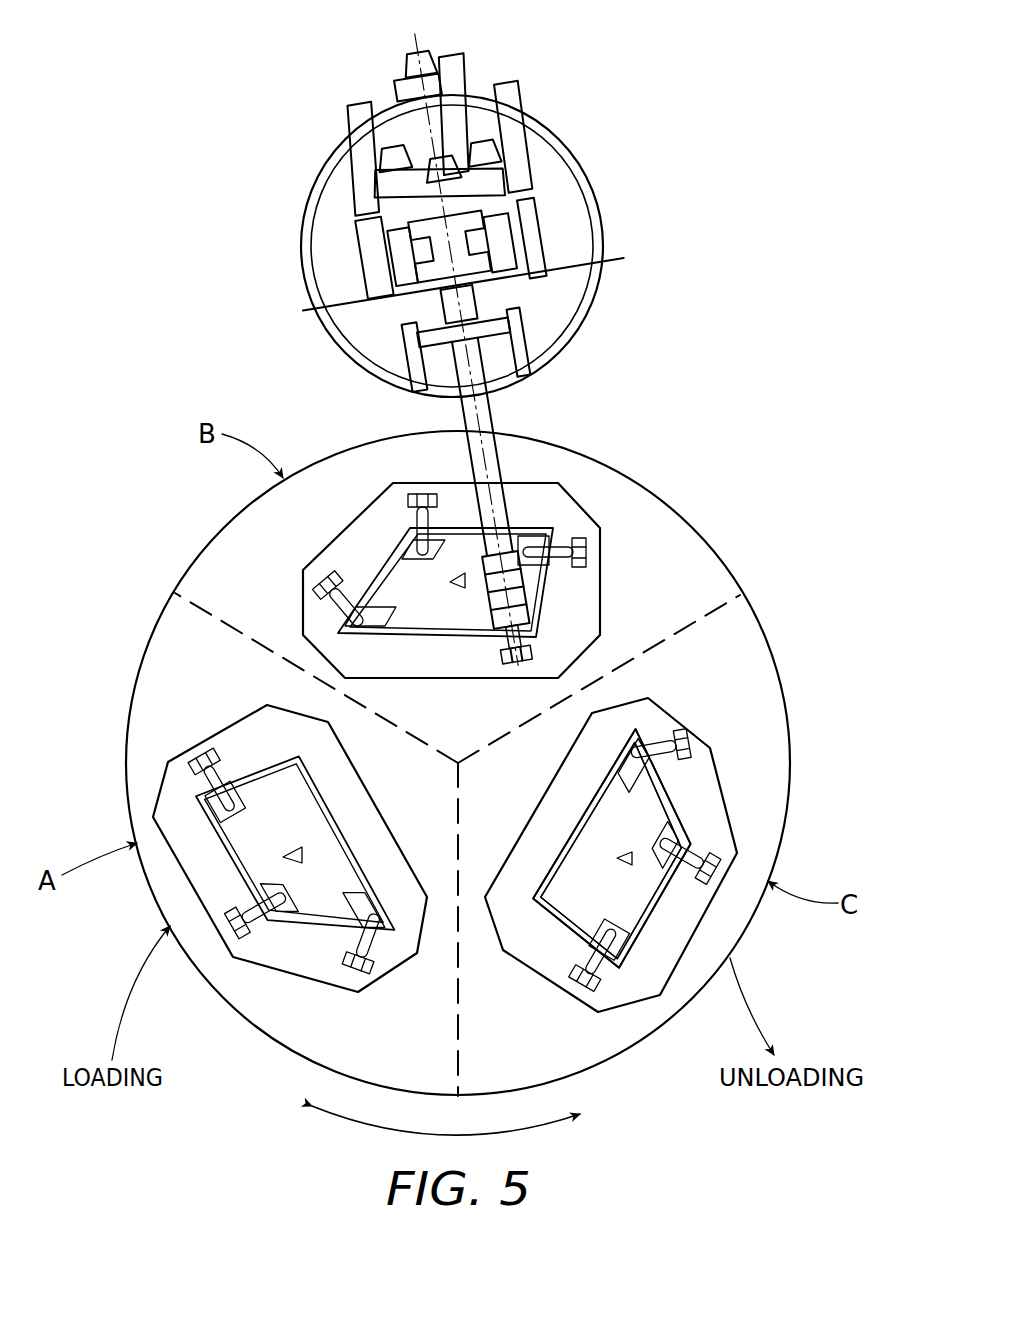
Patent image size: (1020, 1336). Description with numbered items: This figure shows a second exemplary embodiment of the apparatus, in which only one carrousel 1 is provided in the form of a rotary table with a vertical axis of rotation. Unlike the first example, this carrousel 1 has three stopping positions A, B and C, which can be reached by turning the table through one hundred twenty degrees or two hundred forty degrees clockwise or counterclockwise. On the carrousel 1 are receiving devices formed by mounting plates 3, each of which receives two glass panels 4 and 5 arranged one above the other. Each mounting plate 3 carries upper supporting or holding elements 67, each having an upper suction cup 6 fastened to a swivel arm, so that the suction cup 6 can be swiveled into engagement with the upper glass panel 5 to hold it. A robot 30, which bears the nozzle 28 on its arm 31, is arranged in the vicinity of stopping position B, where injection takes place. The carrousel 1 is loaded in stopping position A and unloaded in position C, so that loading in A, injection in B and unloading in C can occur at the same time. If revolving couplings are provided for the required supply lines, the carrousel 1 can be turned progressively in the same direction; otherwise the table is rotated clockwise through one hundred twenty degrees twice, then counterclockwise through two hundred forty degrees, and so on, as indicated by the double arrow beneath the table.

The carrousel 1 is at (645, 500).
The mounting plate 3 is at (592, 614).
The glass panel 4 is at (400, 540).
The glass panel 5 is at (392, 566).
The upper suction cup 6 is at (632, 787).
The nozzle 28 is at (522, 592).
The robot 30 is at (548, 184).
The arm 31 is at (492, 405).
The upper supporting or holding element 67 is at (521, 532).